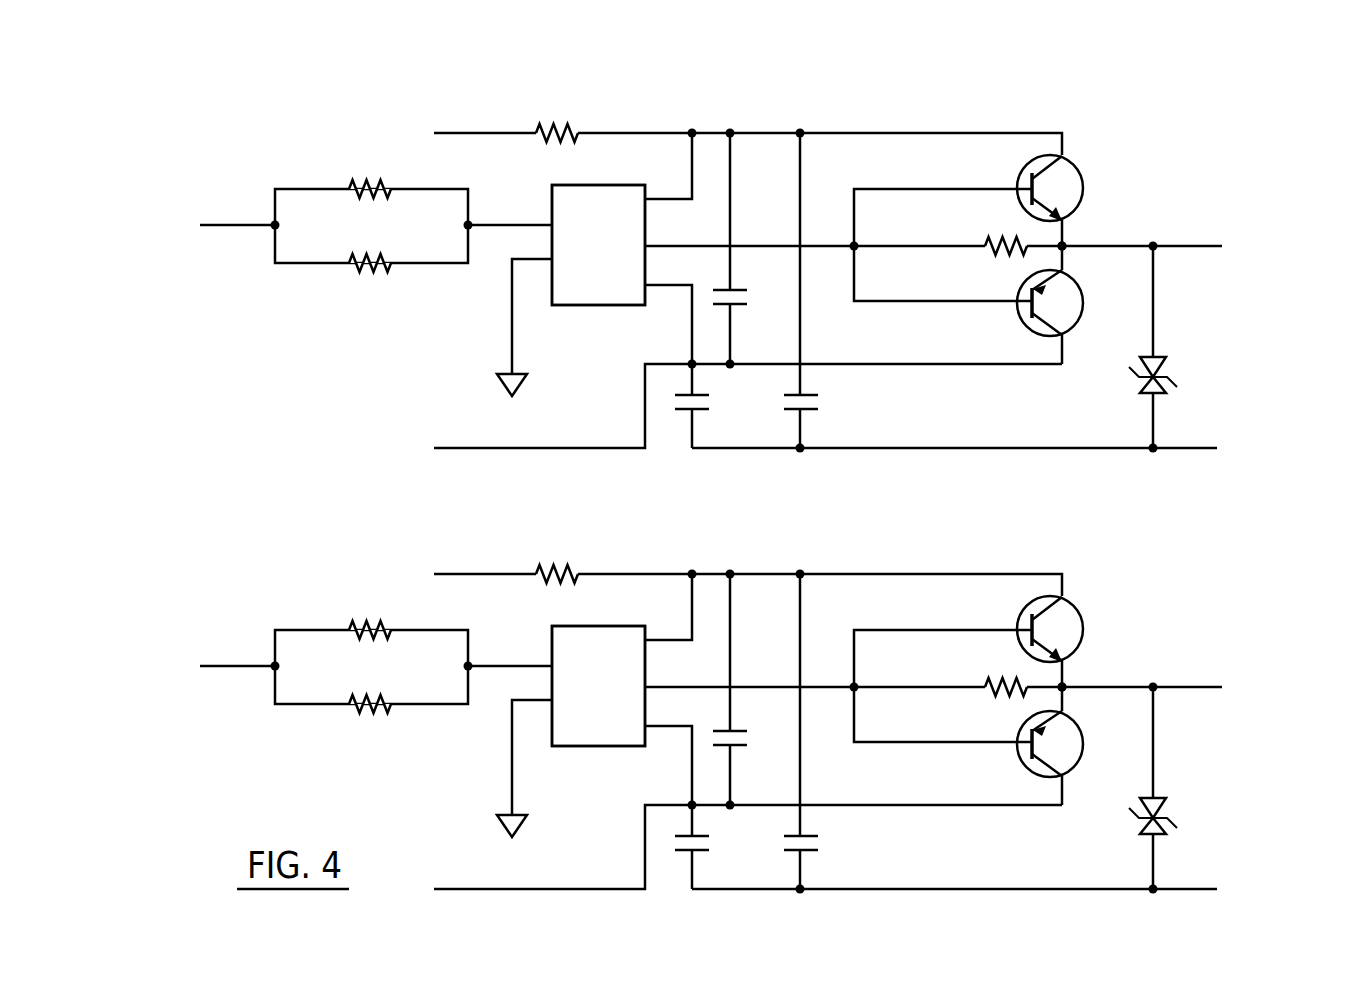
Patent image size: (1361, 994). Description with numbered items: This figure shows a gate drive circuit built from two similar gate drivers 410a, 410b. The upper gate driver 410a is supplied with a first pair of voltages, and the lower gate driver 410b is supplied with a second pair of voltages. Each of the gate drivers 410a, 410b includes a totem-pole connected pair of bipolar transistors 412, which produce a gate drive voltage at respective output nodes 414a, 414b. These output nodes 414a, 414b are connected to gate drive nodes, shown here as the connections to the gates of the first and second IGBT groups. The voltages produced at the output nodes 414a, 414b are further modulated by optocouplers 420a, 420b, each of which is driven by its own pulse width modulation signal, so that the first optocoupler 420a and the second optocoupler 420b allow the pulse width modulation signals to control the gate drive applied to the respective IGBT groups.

The gate driver 410a is at (1132, 103).
The gate driver 410b is at (737, 698).
The bipolar transistors 412 is at (1078, 165).
The output node 414a is at (1069, 240).
The output node 414b is at (1115, 659).
The optocoupler 420a is at (601, 306).
The optocoupler 420b is at (598, 715).